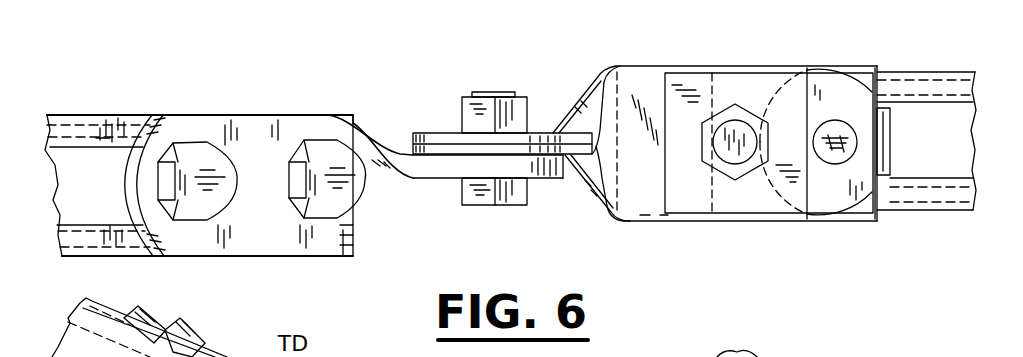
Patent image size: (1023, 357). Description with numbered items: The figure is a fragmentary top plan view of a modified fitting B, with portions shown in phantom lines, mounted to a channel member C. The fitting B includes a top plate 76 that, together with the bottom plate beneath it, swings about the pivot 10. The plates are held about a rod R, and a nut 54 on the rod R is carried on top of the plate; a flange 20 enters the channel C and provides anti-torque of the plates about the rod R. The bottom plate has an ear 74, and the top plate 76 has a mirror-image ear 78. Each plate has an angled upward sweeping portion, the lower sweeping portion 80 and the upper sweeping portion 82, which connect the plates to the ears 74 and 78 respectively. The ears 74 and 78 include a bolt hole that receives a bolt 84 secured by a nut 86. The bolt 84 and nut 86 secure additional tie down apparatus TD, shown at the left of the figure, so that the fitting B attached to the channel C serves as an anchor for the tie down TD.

The tie down apparatus TD is at (242, 102).
The ear 74 is at (428, 179).
The ear 78 is at (412, 138).
The nut 86 is at (462, 107).
The bolt 84 is at (462, 201).
The angled upward sweeping portion 82 is at (585, 112).
The angled upward sweeping portion 80 is at (592, 178).
The top plate 76 is at (646, 76).
The nut 54 is at (750, 174).
The rod R is at (744, 112).
The pivot 10 is at (836, 120).
The flange 20 is at (891, 142).
The channel member C is at (944, 224).
The fitting B is at (674, 240).